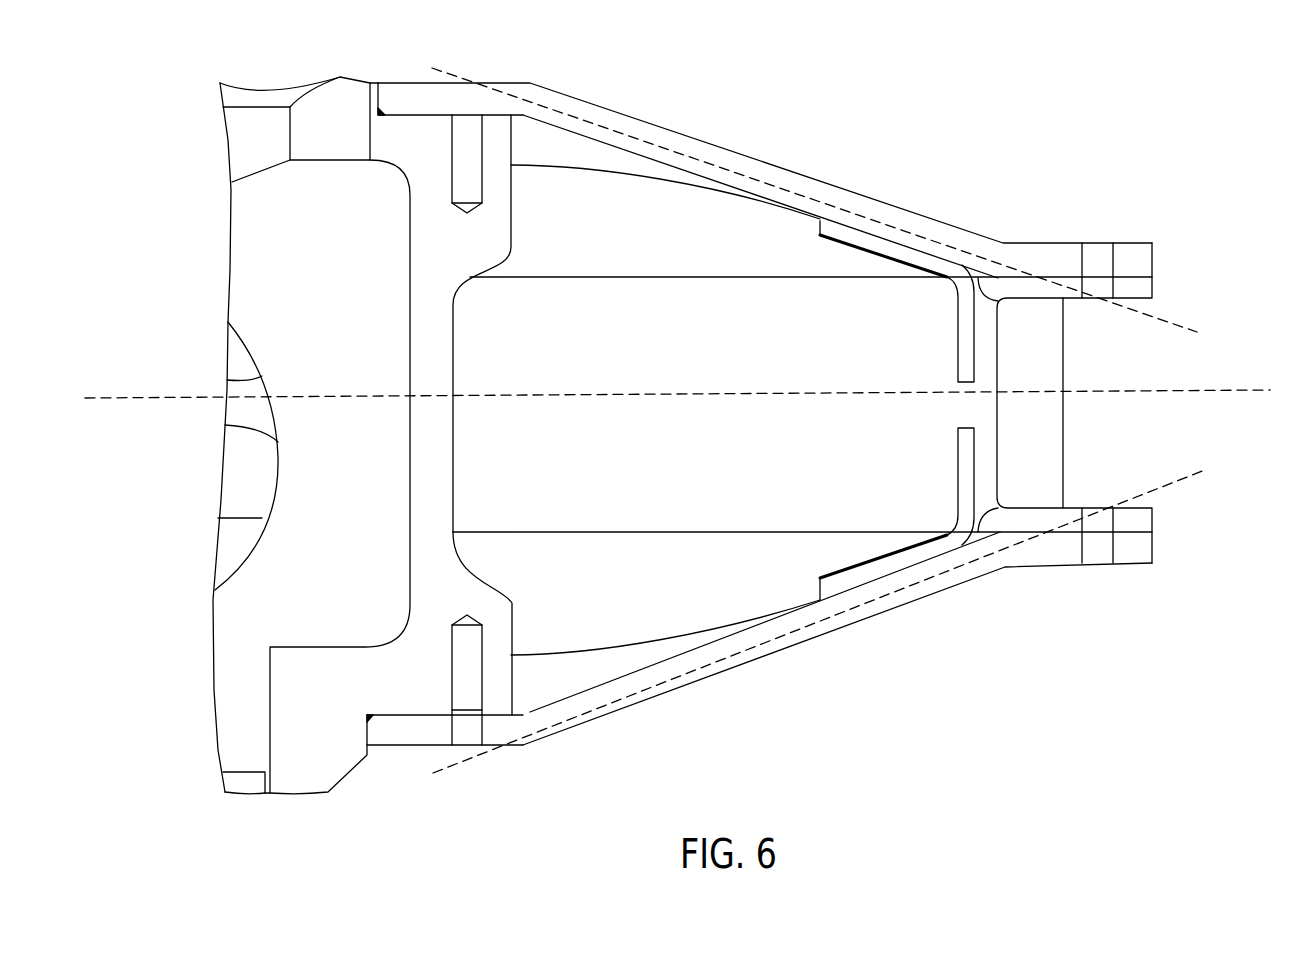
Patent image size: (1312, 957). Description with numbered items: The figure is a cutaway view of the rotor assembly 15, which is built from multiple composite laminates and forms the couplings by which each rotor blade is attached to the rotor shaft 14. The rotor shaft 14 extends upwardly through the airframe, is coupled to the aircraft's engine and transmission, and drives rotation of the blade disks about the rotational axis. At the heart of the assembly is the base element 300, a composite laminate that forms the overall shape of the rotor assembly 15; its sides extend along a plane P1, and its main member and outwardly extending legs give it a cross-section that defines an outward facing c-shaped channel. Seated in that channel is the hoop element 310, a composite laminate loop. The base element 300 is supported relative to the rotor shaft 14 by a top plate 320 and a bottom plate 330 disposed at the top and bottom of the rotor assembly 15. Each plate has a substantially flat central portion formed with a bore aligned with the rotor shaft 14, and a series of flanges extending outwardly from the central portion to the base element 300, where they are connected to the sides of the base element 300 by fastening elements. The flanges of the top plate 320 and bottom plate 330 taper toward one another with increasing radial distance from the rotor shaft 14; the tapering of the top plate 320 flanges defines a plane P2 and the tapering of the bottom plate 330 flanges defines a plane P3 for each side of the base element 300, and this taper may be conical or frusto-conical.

The rotor shaft 14 is at (333, 773).
The rotor assembly 15 is at (183, 103).
The base element 300 is at (1020, 522).
The hoop element 310 is at (1063, 440).
The top plate 320 is at (767, 159).
The bottom plate 330 is at (640, 705).
The plane of the base element P1 is at (1255, 392).
The plane defined by top plate flanges P2 is at (1193, 330).
The plane defined by bottom plate flanges P3 is at (1205, 470).